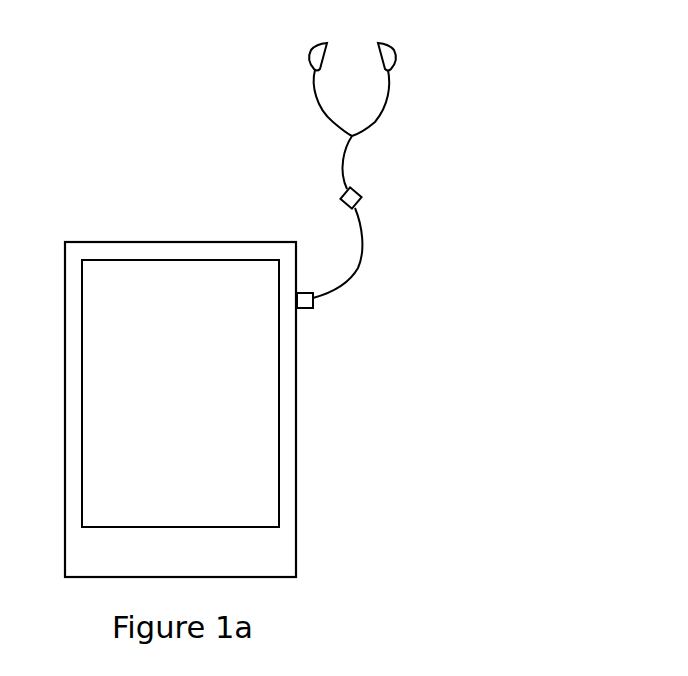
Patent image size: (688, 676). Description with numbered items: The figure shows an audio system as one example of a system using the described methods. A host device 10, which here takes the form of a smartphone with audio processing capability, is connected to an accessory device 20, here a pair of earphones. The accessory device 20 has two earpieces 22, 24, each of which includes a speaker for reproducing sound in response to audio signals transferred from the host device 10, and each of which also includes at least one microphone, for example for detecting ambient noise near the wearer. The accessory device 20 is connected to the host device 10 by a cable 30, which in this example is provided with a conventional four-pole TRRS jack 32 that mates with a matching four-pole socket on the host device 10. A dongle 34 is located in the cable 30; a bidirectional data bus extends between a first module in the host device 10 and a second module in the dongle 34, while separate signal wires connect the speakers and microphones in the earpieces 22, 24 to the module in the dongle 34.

The host device 10 is at (87, 241).
The accessory device 20 is at (393, 94).
The earpiece 22 is at (310, 58).
The earpiece 24 is at (397, 54).
The cable 30 is at (357, 272).
The TRRS jack 32 is at (306, 310).
The dongle 34 is at (362, 191).